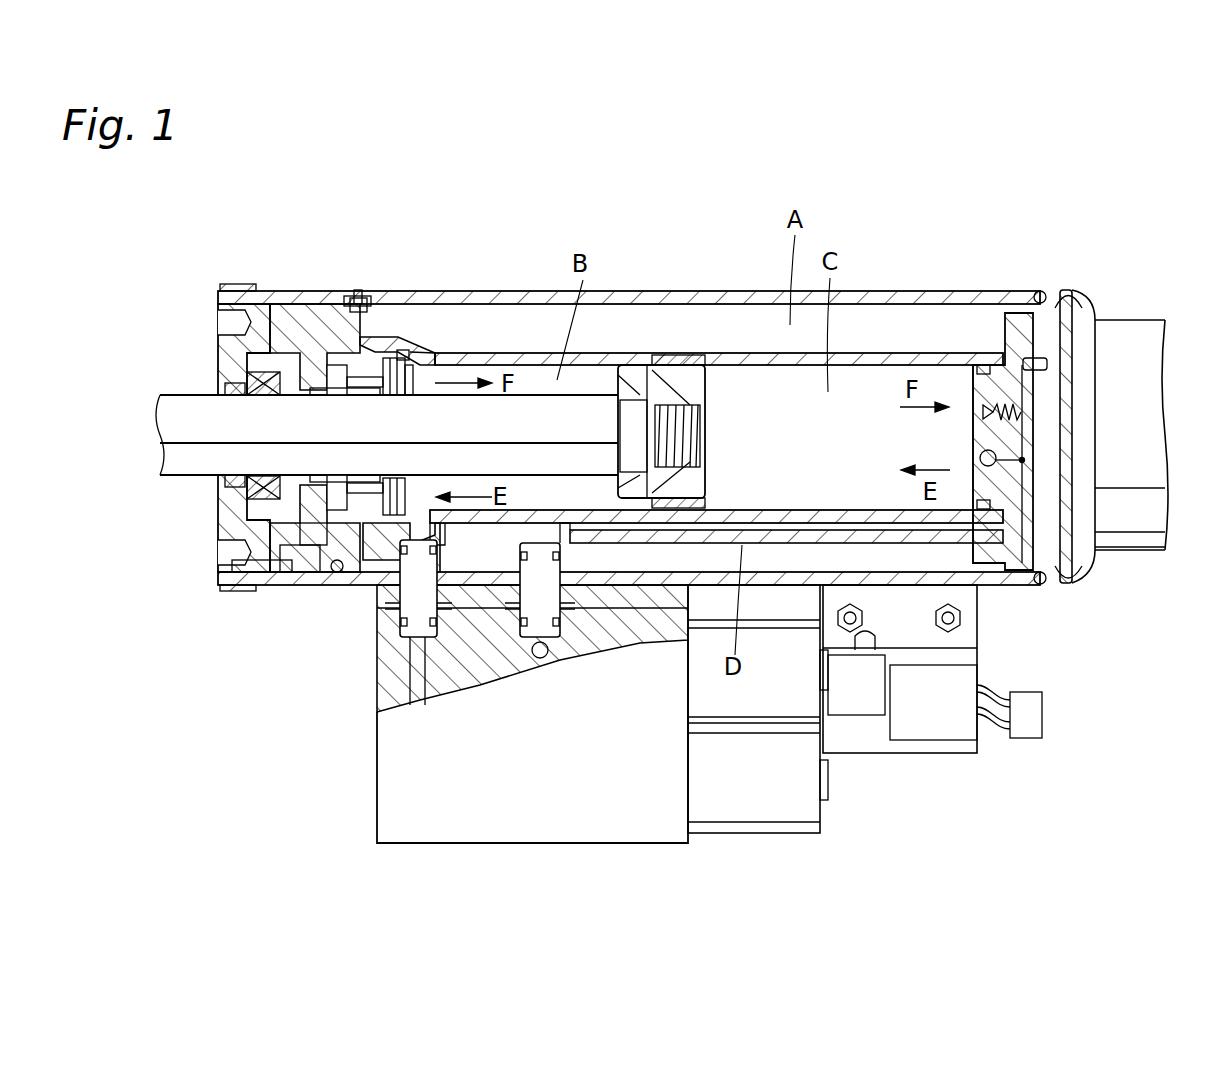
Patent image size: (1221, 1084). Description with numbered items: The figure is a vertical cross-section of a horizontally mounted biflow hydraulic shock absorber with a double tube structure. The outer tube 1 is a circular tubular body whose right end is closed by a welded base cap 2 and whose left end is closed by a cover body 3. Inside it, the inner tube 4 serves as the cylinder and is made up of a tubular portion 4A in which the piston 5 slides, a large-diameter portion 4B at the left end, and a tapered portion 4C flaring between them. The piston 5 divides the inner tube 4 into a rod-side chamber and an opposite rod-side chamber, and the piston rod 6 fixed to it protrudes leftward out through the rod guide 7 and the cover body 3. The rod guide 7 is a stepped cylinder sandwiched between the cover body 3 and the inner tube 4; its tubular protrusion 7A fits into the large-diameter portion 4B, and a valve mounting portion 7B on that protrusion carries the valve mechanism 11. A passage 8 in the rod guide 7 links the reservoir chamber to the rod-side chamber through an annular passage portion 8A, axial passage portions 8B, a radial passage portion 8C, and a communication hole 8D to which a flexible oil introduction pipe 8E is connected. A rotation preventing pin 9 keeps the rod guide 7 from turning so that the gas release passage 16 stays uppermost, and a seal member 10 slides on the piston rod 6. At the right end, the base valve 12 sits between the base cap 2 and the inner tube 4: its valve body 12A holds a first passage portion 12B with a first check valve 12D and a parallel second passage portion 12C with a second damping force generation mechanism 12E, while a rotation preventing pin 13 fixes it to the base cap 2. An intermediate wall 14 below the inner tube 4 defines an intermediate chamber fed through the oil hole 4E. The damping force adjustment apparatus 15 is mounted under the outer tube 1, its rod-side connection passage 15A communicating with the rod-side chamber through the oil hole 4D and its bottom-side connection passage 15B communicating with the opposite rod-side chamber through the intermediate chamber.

The outer tube 1 is at (920, 300).
The base cap 2 is at (1097, 340).
The cover body 3 is at (230, 343).
The inner tube 4 is at (727, 352).
The tubular portion 4A is at (866, 360).
The large-diameter portion 4B is at (392, 338).
The tapered portion 4C is at (420, 352).
The oil hole 4D is at (397, 600).
The oil hole 4E is at (982, 584).
The piston 5 is at (665, 362).
The piston rod 6 is at (192, 455).
The rod guide 7 is at (290, 322).
The tubular protrusion 7A is at (390, 358).
The valve mounting portion 7B is at (368, 560).
The passage 8 is at (272, 492).
The annular passage portion 8A is at (337, 370).
The axial passage portions 8B is at (350, 345).
The radial passage portion 8C is at (300, 580).
The communication hole 8D is at (333, 556).
The oil introduction pipe 8E is at (340, 574).
The rotation preventing pin 9 is at (357, 300).
The seal member 10 is at (234, 386).
The valve mechanism 11 is at (418, 374).
The base valve 12 is at (1048, 580).
The valve body 12A is at (1028, 355).
The first passage portion 12B is at (1065, 512).
The second passage portion 12C is at (1063, 378).
The first check valve 12D is at (1036, 456).
The second damping force generation mechanism 12E is at (983, 385).
The rotation preventing pin 13 is at (1070, 298).
The intermediate wall 14 is at (838, 640).
The damping force adjustment apparatus 15 is at (825, 820).
The rod-side connection passage 15A is at (405, 645).
The bottom-side connection passage 15B is at (542, 660).
The gas release passage 16 is at (402, 352).